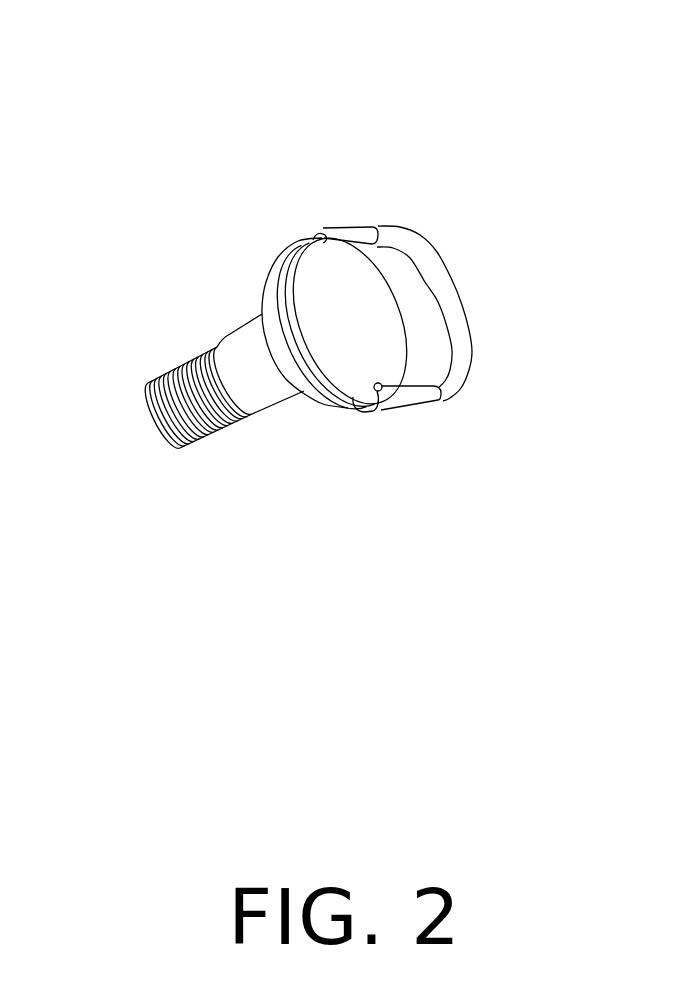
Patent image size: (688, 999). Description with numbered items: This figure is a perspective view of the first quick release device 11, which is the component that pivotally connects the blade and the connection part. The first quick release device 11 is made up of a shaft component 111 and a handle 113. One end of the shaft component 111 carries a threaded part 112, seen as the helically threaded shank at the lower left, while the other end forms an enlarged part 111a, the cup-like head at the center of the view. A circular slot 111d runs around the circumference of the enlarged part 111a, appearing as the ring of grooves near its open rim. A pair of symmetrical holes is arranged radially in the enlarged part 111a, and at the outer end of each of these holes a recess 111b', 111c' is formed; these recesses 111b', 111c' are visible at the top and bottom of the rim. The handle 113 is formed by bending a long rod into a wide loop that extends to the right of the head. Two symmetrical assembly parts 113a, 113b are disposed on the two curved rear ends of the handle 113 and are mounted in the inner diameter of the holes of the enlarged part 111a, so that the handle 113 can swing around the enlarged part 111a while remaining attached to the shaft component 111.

The first quick release device 11 is at (268, 85).
The shaft component 111 is at (250, 327).
The enlarged part 111a is at (383, 352).
The recess 111b' is at (247, 185).
The recess 111c' is at (451, 440).
The circular slot 111d is at (320, 378).
The threaded part 112 is at (175, 371).
The handle 113 is at (448, 295).
The assembly part 113a is at (368, 403).
The assembly part 113b is at (318, 235).